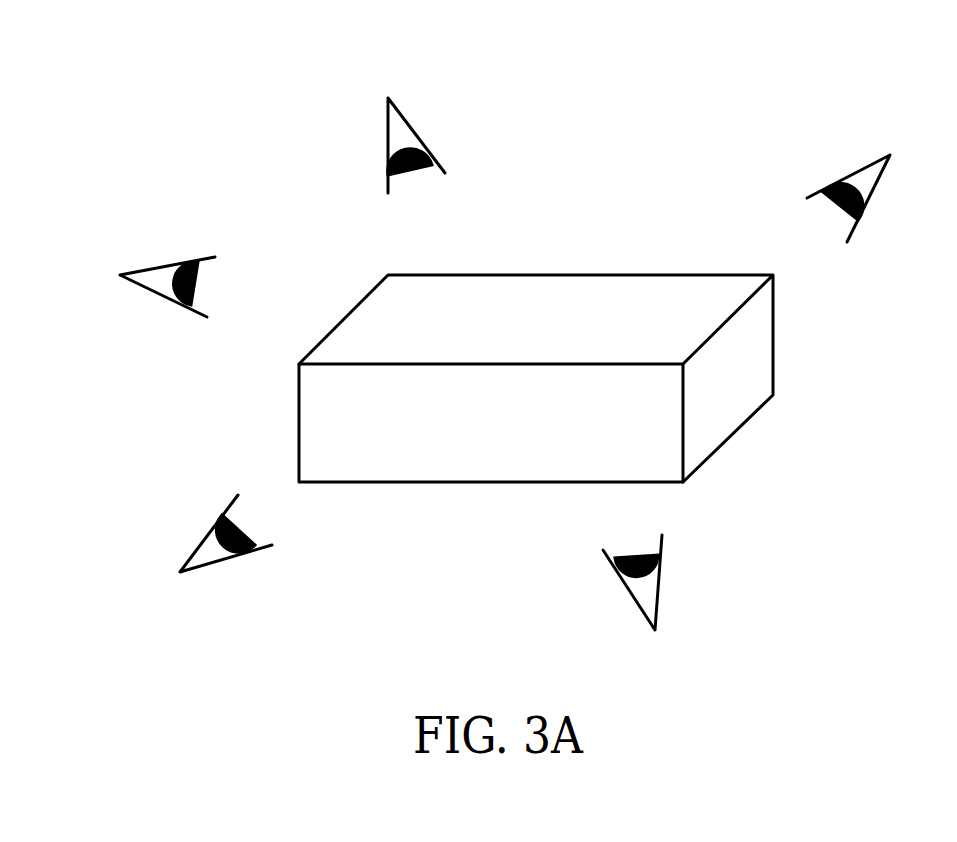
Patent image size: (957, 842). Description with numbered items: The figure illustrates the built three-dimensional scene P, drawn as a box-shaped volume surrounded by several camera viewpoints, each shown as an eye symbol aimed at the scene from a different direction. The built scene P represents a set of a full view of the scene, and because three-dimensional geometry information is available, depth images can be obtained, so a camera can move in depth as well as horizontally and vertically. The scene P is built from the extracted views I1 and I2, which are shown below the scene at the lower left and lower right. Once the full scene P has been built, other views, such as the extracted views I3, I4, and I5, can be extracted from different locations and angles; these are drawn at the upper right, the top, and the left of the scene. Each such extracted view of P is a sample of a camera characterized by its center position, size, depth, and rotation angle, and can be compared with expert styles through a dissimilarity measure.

The built 3D scene P is at (775, 333).
The extracted view I1 is at (208, 545).
The extracted view I2 is at (636, 606).
The extracted view I3 is at (861, 179).
The extracted view I4 is at (409, 123).
The extracted view I5 is at (150, 283).